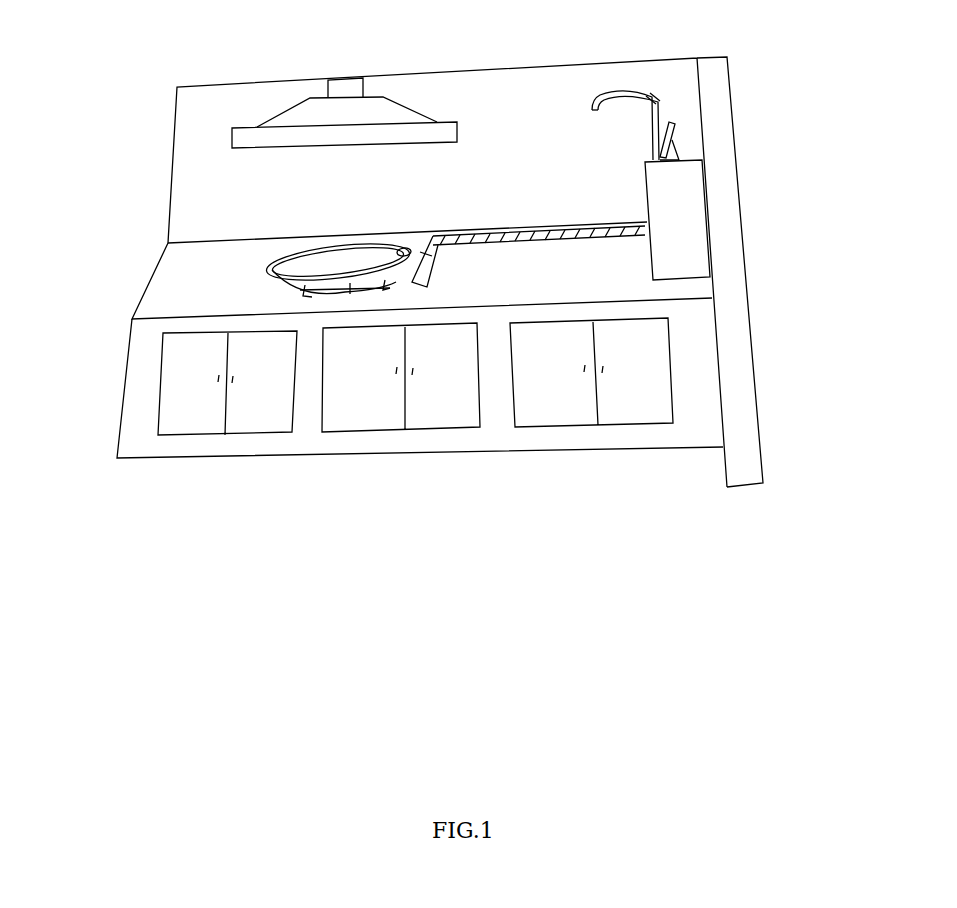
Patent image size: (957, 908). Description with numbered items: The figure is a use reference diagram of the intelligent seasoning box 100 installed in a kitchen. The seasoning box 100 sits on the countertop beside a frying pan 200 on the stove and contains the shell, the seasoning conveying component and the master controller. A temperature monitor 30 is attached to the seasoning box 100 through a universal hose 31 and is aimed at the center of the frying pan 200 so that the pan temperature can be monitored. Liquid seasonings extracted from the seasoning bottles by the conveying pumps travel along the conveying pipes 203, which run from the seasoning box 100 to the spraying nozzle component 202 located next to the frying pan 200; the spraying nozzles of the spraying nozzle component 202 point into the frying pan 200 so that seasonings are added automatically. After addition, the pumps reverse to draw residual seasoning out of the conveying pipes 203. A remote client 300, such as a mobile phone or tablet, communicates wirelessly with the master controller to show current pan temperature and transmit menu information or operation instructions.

The seasoning box 100 is at (680, 217).
The frying pan 200 is at (297, 265).
The spraying nozzle component 202 is at (422, 262).
The conveying pipes 203 is at (500, 248).
The temperature monitor 30 is at (595, 97).
The universal hose 31 is at (652, 97).
The remote client 300 is at (673, 135).